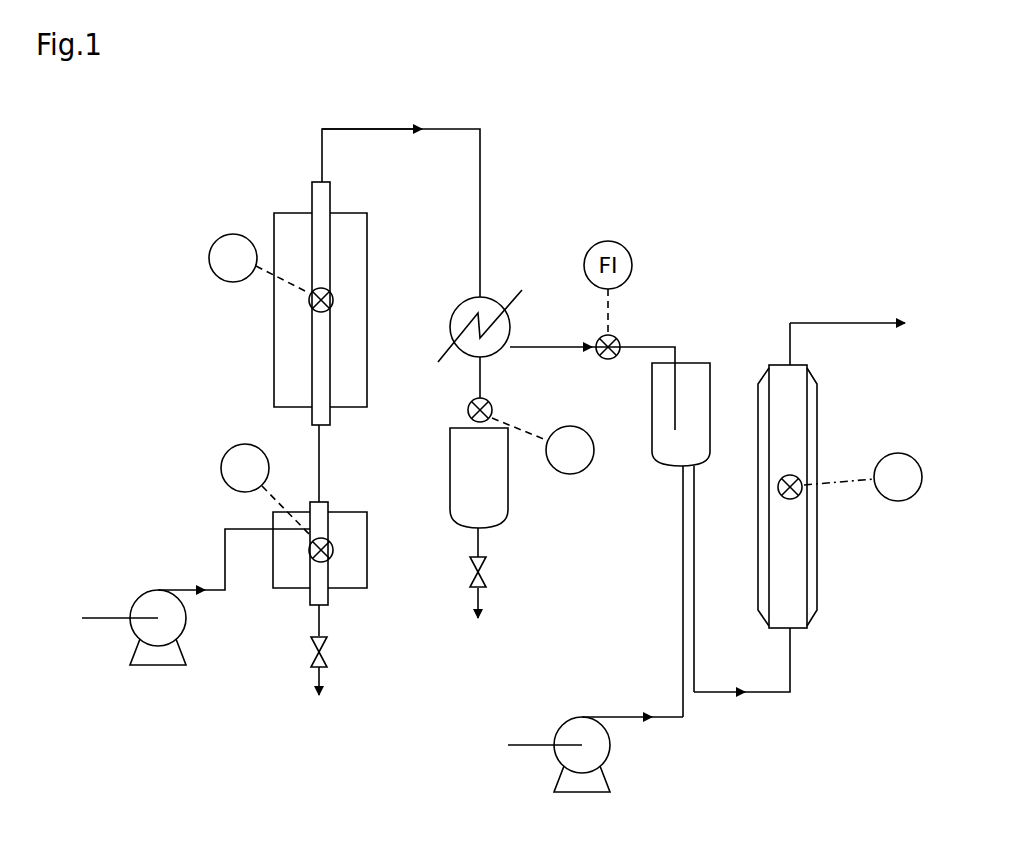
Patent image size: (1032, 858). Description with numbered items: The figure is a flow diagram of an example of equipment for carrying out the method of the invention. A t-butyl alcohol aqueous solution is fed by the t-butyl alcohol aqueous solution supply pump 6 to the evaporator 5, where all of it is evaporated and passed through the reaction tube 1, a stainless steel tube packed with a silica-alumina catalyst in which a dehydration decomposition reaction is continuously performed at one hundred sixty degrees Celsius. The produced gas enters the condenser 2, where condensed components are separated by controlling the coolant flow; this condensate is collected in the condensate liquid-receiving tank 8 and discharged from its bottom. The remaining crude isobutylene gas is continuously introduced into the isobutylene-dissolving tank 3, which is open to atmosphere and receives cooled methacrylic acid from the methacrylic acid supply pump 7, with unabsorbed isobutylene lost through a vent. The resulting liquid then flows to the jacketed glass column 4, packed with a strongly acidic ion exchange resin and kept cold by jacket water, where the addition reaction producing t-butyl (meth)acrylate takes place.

The reaction tube 1 is at (358, 222).
The condenser 2 is at (493, 292).
The isobutylene-dissolving tank 3 is at (683, 366).
The column 4 is at (817, 432).
The evaporator 5 is at (345, 598).
The t-butyl alcohol aqueous solution supply pump 6 is at (145, 605).
The methacrylic acid supply pump 7 is at (610, 760).
The condensate liquid-receiving tank 8 is at (500, 520).